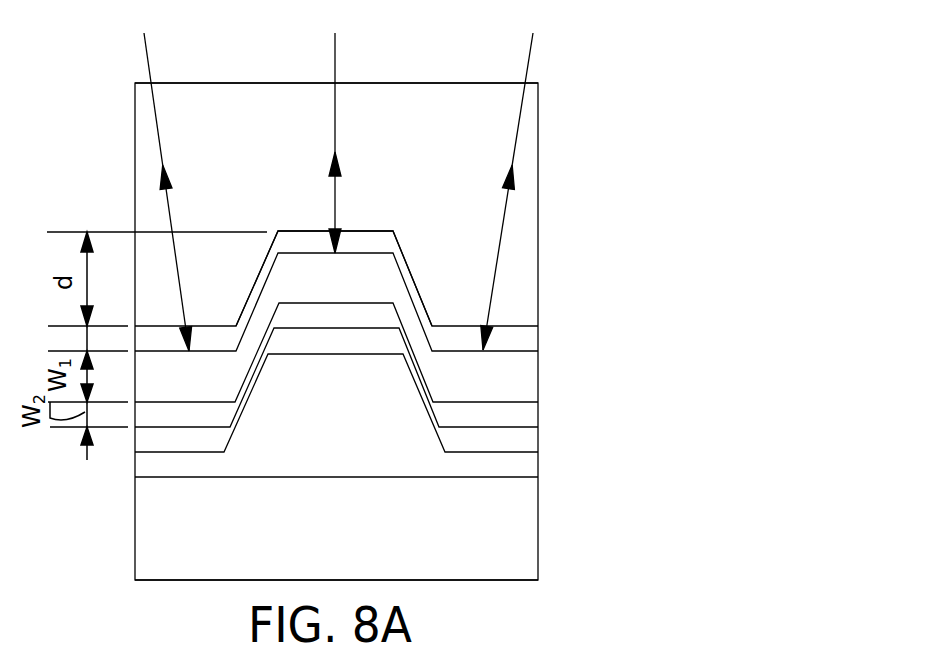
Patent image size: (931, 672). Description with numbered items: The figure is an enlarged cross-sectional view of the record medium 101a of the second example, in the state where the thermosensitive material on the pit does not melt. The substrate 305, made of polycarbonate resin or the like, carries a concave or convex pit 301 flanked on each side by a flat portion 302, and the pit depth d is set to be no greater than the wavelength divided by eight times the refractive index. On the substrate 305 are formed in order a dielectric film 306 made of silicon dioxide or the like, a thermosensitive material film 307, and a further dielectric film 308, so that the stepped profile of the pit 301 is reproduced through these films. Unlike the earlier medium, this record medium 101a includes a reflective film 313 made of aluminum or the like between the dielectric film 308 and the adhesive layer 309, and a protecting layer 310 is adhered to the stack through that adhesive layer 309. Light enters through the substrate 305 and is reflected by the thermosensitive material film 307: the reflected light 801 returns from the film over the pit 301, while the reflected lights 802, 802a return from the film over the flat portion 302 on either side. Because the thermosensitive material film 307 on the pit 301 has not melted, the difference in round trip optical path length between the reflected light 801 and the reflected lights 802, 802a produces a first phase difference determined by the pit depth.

The reflected light 802 is at (148, 53).
The reflected light 801 is at (335, 48).
The reflected light 802a is at (530, 60).
The record medium 101a is at (537, 128).
The substrate 305 is at (525, 172).
The pit 301 is at (383, 227).
The flat portion 302 is at (515, 323).
The dielectric film 306 is at (525, 338).
The thermosensitive material film 307 is at (510, 380).
The dielectric film 308 is at (523, 408).
The reflective film 313 is at (518, 438).
The adhesive layer 309 is at (523, 465).
The protecting layer 310 is at (520, 538).